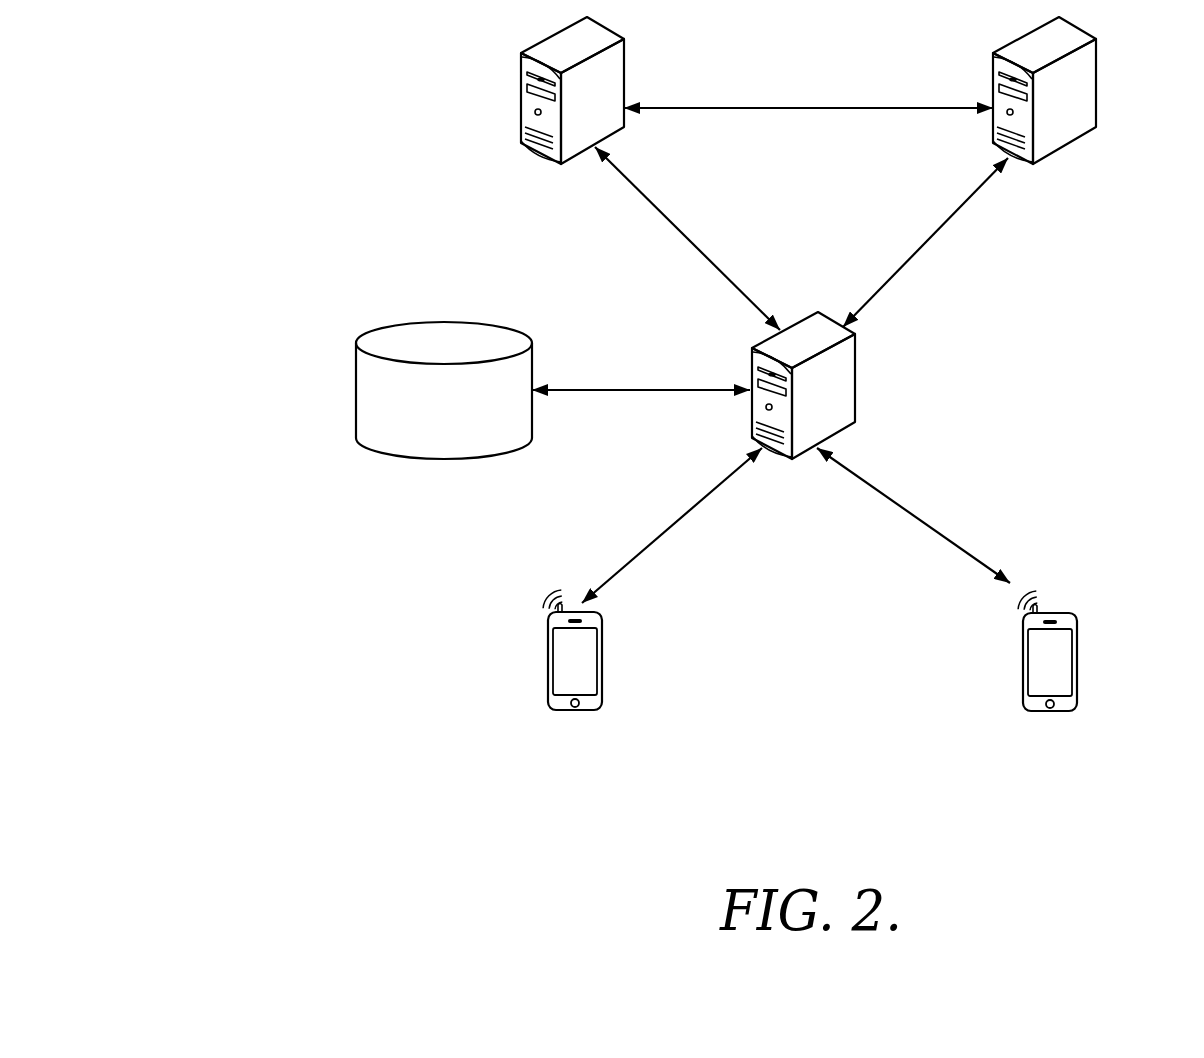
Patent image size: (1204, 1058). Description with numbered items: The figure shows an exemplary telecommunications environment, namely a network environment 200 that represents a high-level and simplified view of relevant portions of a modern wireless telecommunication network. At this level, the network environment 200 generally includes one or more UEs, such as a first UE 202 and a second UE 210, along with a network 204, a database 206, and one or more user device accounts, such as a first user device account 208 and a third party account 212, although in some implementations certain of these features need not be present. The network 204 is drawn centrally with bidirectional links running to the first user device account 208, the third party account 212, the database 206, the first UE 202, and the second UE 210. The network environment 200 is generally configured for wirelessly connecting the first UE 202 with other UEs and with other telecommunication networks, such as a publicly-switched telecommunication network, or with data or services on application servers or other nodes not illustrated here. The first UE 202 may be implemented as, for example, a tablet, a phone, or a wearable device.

The network environment 200 is at (218, 99).
The first UE 202 is at (603, 661).
The network 204 is at (856, 373).
The database 206 is at (356, 387).
The first user device account 208 is at (625, 76).
The second UE 210 is at (1078, 661).
The third party account 212 is at (1097, 76).